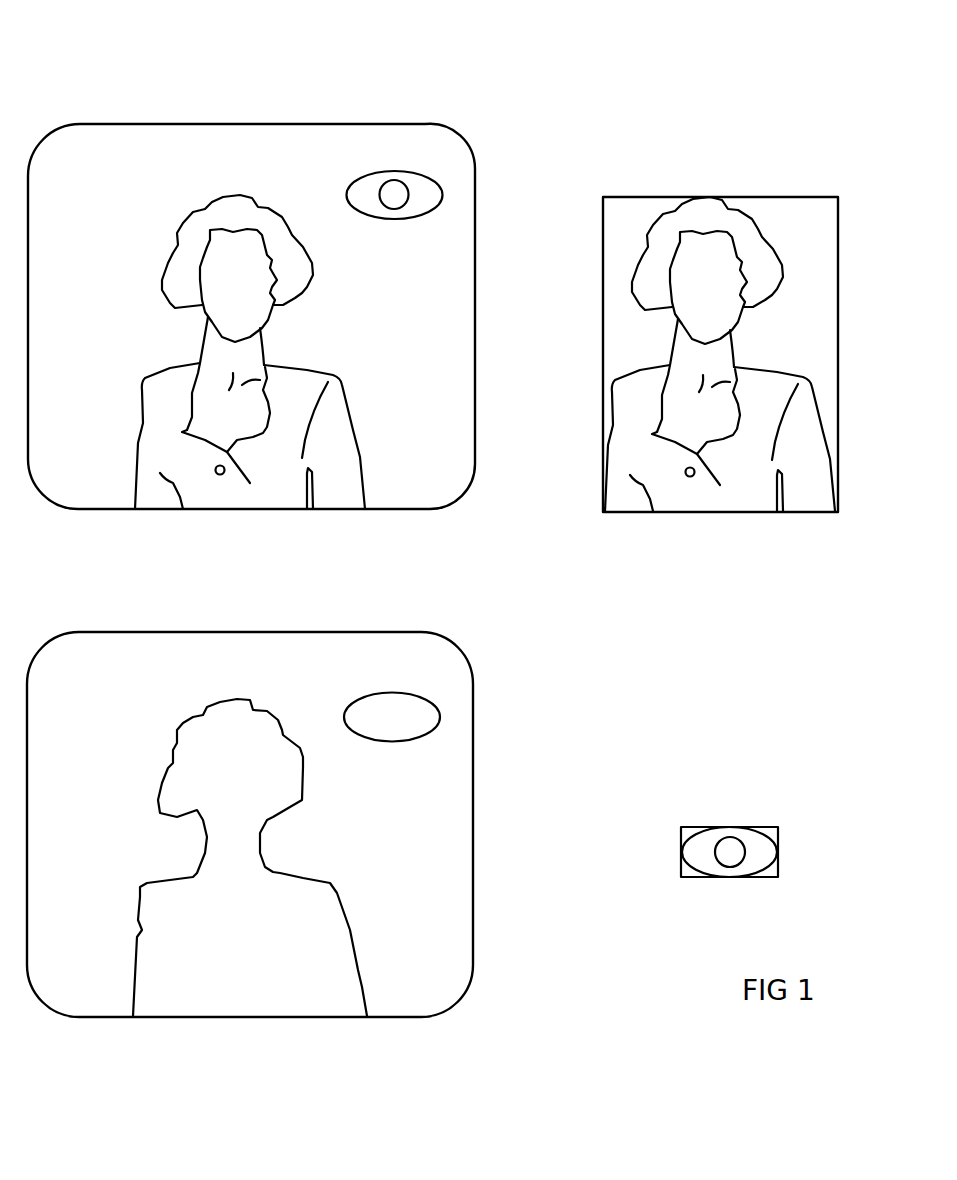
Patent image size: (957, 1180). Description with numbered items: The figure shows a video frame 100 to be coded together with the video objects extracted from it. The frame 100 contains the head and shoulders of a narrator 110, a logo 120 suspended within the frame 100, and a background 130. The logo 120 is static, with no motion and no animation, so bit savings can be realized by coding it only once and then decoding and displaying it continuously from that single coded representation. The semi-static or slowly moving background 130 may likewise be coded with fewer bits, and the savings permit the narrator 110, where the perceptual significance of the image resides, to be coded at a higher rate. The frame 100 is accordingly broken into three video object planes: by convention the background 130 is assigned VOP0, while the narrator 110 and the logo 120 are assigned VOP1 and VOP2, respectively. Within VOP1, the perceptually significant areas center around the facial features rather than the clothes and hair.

The frame 100 is at (453, 134).
The narrator 110 is at (143, 430).
The logo 120 is at (400, 219).
The background 130 is at (135, 197).
The video object plane for the background VOP0 is at (473, 825).
The video object plane for the narrator VOP1 is at (838, 313).
The video object plane for the logo VOP2 is at (770, 827).